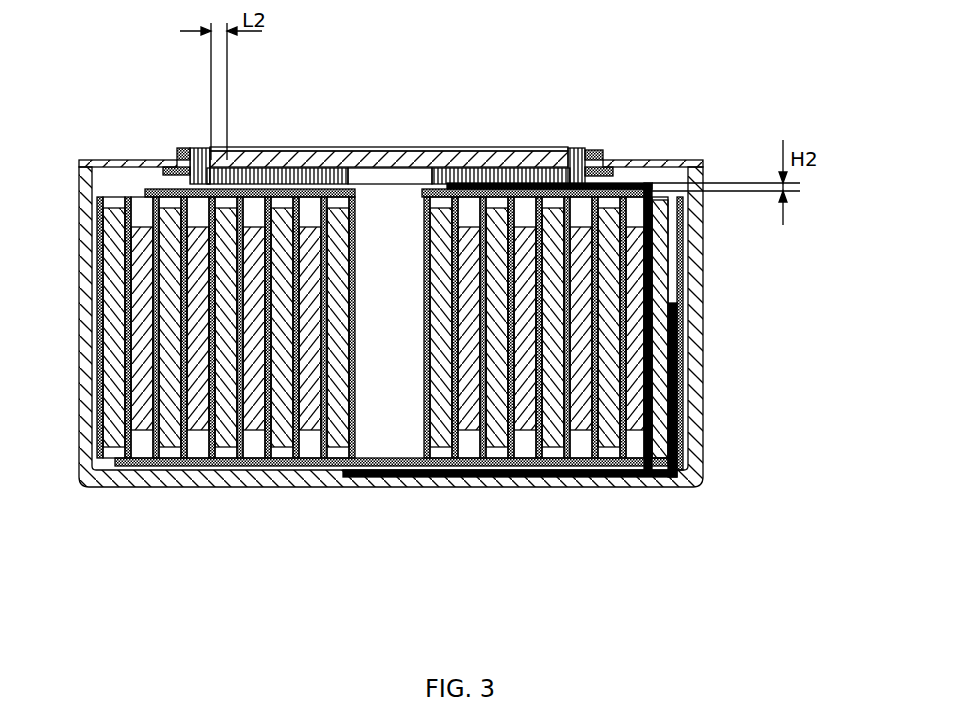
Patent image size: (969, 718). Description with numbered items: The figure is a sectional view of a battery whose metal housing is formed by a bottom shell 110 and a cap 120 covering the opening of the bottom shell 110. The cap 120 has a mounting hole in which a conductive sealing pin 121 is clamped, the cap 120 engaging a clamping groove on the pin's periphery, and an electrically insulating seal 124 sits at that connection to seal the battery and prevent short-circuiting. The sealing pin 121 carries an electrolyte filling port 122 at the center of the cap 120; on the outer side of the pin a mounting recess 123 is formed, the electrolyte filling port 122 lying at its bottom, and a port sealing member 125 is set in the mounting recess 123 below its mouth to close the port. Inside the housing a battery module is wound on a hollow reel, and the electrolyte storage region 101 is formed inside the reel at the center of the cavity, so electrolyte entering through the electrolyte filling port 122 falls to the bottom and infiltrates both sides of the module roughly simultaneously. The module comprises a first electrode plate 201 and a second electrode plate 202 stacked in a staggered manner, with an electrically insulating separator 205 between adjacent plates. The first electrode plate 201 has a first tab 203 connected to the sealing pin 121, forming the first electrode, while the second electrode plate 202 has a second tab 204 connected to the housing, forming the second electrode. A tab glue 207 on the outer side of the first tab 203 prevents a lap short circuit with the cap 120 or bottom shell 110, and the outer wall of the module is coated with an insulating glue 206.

The electrolyte storage region 101 is at (393, 405).
The bottom shell 110 is at (206, 478).
The cap 120 is at (98, 160).
The sealing pin 121 is at (288, 172).
The electrolyte filling port 122 is at (372, 172).
The mounting recess 123 is at (570, 150).
The seal 124 is at (180, 148).
The port sealing member 125 is at (500, 165).
The first electrode plate 201 is at (634, 302).
The second electrode plate 202 is at (658, 334).
The first tab 203 is at (653, 376).
The second tab 204 is at (683, 464).
The separator 205 is at (657, 407).
The insulating glue 206 is at (316, 466).
The tab glue 207 is at (650, 183).